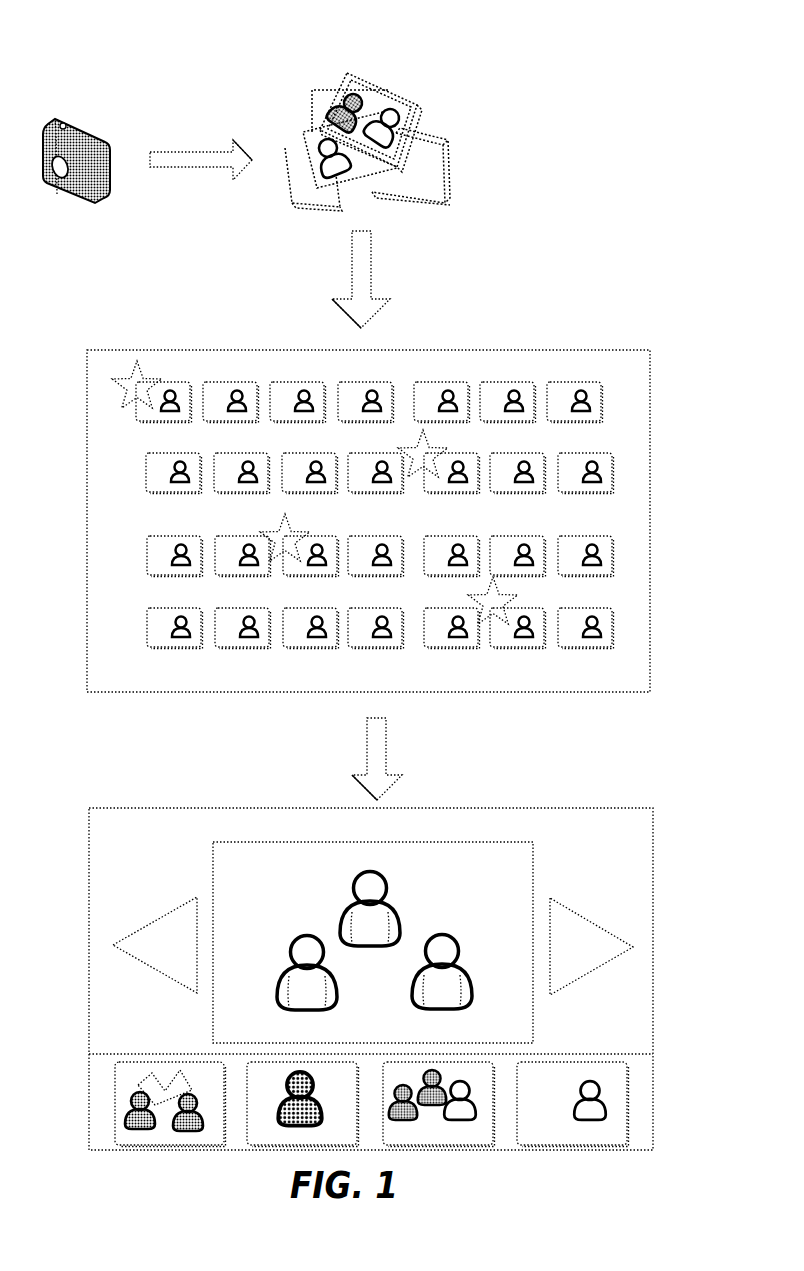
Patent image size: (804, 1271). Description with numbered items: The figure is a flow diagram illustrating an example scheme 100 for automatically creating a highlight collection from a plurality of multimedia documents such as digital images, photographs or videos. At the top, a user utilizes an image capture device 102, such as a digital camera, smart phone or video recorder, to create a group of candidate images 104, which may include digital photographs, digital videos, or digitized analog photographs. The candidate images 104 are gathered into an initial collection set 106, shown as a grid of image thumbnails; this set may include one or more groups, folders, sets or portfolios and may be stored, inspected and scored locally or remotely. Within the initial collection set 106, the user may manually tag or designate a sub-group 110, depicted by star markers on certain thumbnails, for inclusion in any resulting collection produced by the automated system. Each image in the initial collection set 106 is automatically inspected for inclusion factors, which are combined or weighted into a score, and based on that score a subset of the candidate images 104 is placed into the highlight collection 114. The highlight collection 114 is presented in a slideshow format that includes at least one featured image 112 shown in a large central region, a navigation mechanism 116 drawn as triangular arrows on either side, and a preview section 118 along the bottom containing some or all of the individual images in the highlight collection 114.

The scheme 100 is at (652, 43).
The image capture device 102 is at (78, 125).
The candidate images 104 is at (426, 90).
The initial collection set 106 is at (563, 350).
The sub-group 110 is at (122, 362).
The featured image 112 is at (435, 842).
The highlight collection 114 is at (572, 808).
The navigation mechanism 116 is at (627, 940).
The preview section 118 is at (637, 1055).